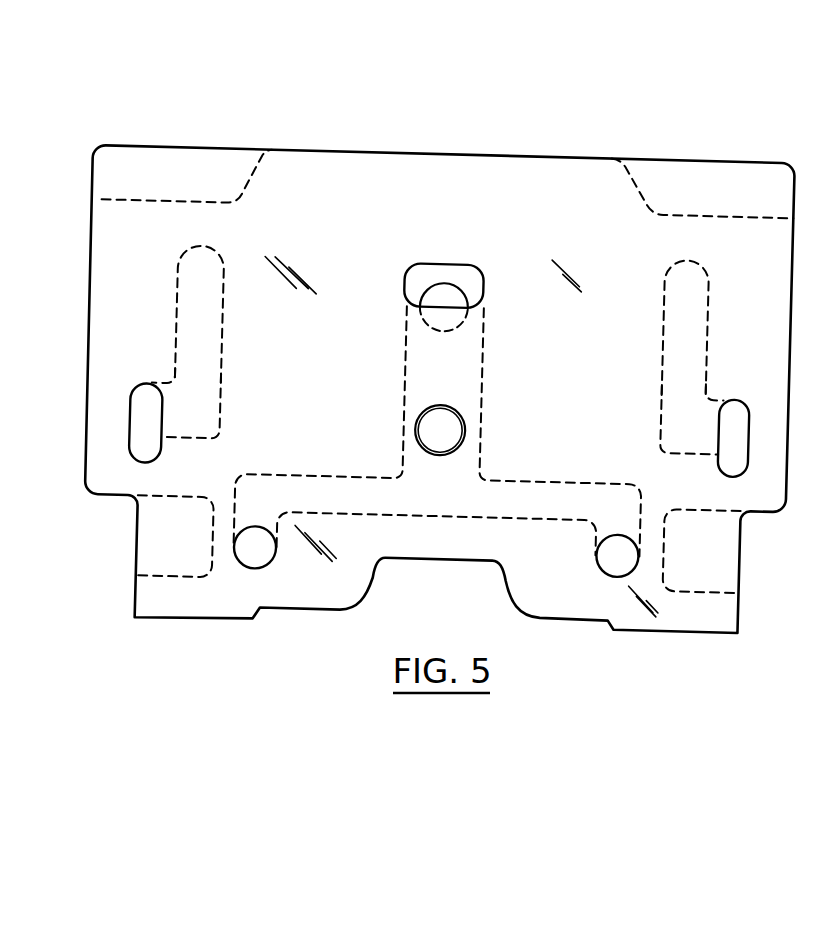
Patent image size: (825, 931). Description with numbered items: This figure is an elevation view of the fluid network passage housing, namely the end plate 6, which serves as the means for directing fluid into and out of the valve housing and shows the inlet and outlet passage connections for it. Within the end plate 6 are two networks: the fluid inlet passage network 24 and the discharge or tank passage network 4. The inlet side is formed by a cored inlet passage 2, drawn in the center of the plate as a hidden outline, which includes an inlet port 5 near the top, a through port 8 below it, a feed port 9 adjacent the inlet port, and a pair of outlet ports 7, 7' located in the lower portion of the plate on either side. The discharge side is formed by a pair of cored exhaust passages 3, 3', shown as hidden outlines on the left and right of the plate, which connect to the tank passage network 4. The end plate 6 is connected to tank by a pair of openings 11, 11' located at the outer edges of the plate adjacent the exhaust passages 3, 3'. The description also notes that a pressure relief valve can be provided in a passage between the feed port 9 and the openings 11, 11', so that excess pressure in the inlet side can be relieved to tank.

The end plate 6 is at (519, 146).
The inlet port 5 is at (448, 281).
The feed port 9 is at (486, 265).
The discharge or tank passage network 4 is at (228, 358).
The cored exhaust passage 3 is at (203, 404).
The cored exhaust passage 3' is at (657, 417).
The opening 11 is at (128, 422).
The opening 11' is at (751, 438).
The cored inlet passage 2 is at (490, 380).
The through port 8 is at (462, 426).
The fluid inlet passage network 24 is at (505, 471).
The outlet port 7 is at (266, 554).
The outlet port 7' is at (601, 562).